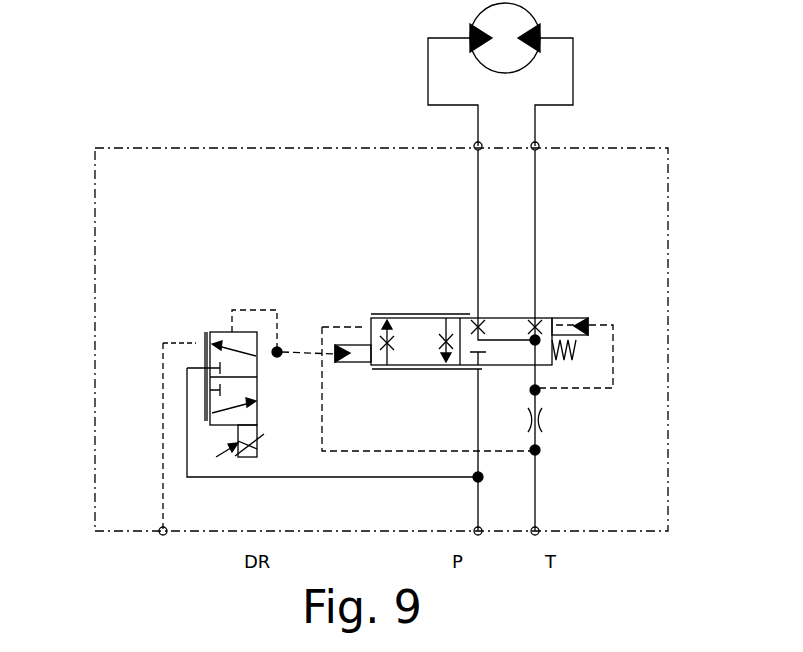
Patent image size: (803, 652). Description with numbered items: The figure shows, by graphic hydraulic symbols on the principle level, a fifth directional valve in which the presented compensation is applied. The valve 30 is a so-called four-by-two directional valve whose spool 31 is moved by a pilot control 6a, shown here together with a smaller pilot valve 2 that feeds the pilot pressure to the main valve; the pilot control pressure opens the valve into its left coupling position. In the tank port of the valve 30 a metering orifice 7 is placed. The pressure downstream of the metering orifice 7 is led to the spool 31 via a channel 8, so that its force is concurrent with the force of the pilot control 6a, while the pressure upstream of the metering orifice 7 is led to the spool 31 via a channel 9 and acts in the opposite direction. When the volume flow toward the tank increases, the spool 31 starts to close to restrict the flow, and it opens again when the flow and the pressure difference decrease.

The valve 30 is at (207, 148).
The directional control valve 2 is at (147, 378).
The channel 8 is at (491, 353).
The pilot control 6a is at (352, 352).
The spool 31 is at (415, 342).
The channel 9 is at (613, 352).
The metering orifice 7 is at (545, 420).